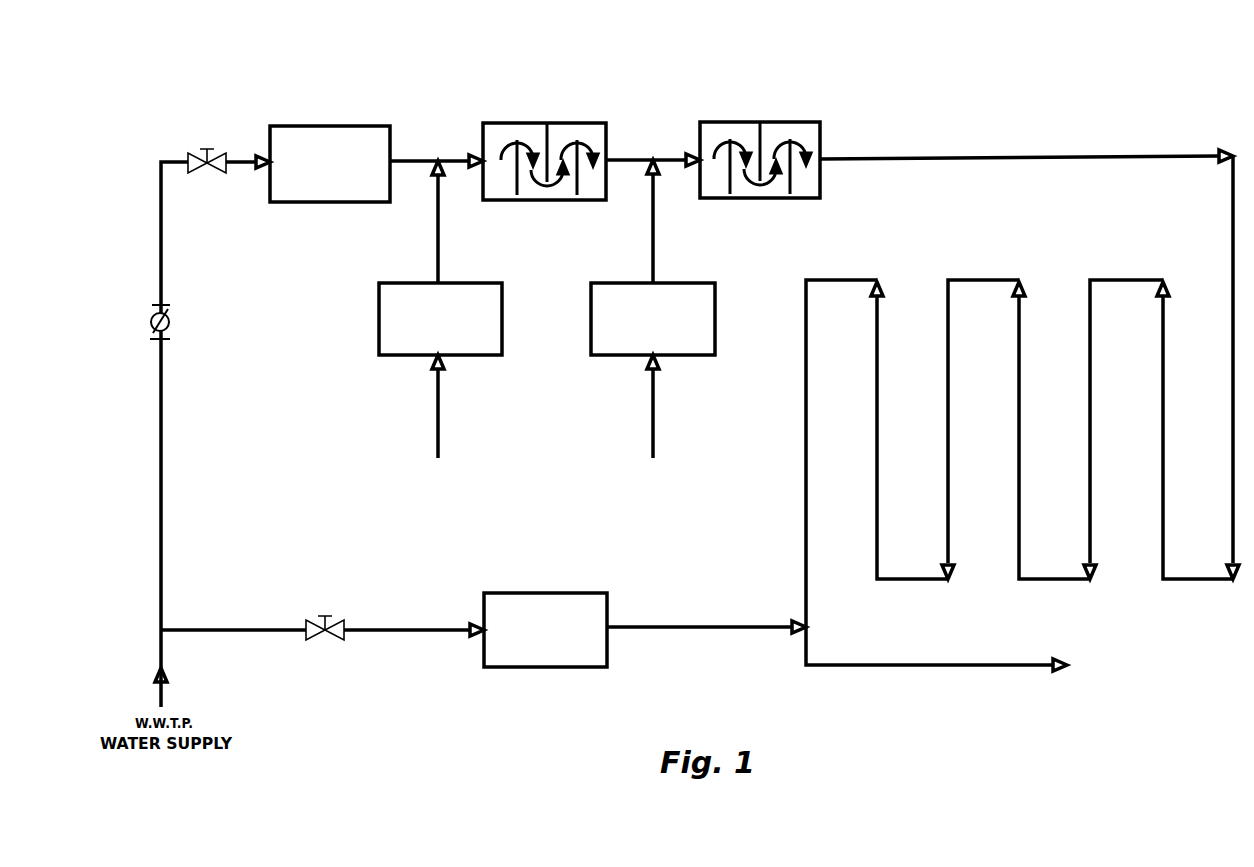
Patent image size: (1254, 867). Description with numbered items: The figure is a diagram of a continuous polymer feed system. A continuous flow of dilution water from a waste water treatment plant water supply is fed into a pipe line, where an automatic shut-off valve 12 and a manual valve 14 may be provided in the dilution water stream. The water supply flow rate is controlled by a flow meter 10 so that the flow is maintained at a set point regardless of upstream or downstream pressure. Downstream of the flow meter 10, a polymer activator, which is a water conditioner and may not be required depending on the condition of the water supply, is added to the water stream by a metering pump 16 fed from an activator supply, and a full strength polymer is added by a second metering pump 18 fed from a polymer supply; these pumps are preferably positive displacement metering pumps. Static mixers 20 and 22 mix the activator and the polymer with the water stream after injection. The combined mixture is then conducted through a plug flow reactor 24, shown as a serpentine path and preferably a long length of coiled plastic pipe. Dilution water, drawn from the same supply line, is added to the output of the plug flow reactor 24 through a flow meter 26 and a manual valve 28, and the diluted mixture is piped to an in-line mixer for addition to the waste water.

The flow meter 10 is at (278, 191).
The automatic shut-off valve 12 is at (170, 322).
The manual valve 14 is at (222, 172).
The metering pump 16 is at (493, 313).
The second metering pump 18 is at (707, 313).
The static mixer 20 is at (565, 192).
The static mixer 22 is at (768, 192).
The plug flow reactor 24 is at (1196, 581).
The flow meter 26 is at (600, 640).
The manual valve 28 is at (333, 640).